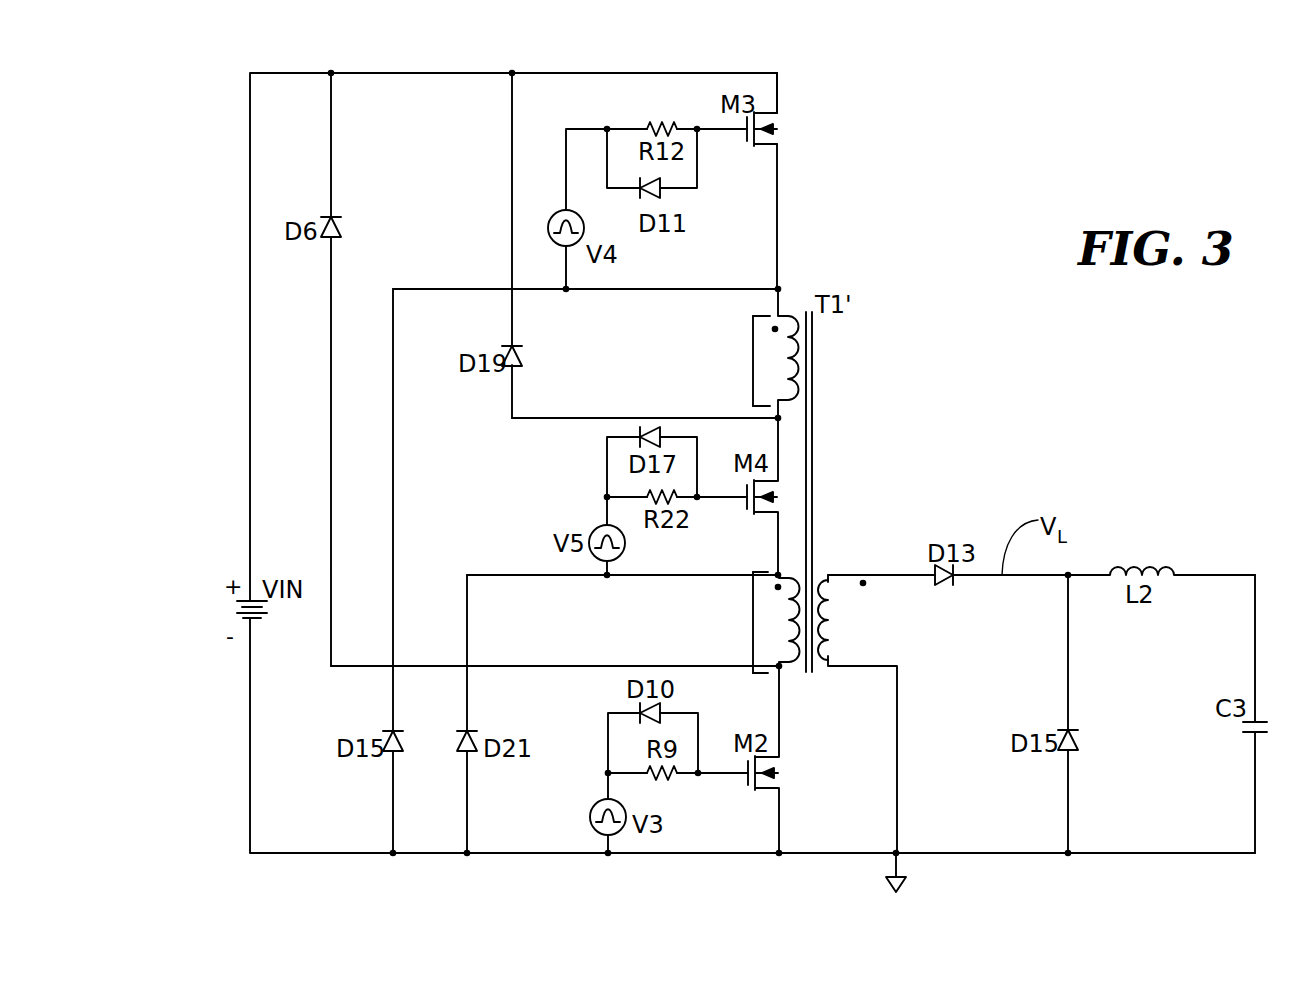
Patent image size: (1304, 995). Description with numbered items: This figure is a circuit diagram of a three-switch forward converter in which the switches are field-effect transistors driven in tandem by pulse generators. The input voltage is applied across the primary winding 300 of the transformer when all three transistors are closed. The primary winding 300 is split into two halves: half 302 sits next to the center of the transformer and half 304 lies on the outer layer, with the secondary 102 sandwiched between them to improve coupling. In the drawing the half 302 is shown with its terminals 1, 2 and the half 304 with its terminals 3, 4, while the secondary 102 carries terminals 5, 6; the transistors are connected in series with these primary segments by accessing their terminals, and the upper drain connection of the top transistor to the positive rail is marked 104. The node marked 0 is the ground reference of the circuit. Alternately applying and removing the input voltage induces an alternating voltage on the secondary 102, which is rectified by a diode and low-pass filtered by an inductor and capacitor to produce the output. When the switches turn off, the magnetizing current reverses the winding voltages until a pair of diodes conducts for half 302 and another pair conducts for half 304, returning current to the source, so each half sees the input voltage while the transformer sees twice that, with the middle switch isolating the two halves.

The secondary 102 is at (870, 619).
The primary switching circuit 104 is at (772, 73).
The primary winding 300 is at (755, 372).
The half of primary winding 302 is at (737, 353).
The half of primary winding 304 is at (728, 622).
The ground 0 is at (909, 878).
The winding terminal 1 is at (751, 317).
The winding terminal 2 is at (751, 404).
The winding terminal 3 is at (749, 590).
The winding terminal 4 is at (749, 654).
The winding terminal 5 is at (840, 594).
The winding terminal 6 is at (873, 622).